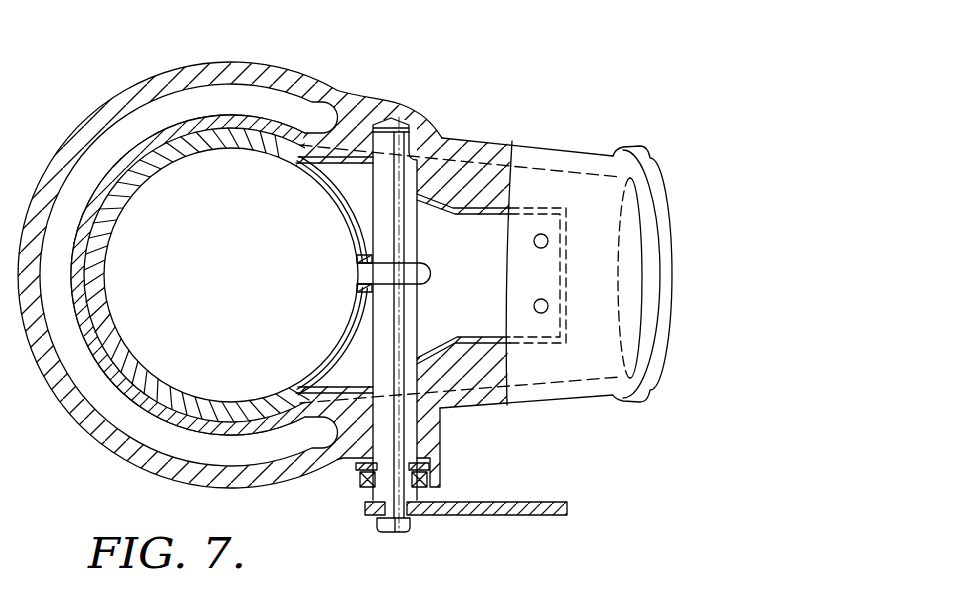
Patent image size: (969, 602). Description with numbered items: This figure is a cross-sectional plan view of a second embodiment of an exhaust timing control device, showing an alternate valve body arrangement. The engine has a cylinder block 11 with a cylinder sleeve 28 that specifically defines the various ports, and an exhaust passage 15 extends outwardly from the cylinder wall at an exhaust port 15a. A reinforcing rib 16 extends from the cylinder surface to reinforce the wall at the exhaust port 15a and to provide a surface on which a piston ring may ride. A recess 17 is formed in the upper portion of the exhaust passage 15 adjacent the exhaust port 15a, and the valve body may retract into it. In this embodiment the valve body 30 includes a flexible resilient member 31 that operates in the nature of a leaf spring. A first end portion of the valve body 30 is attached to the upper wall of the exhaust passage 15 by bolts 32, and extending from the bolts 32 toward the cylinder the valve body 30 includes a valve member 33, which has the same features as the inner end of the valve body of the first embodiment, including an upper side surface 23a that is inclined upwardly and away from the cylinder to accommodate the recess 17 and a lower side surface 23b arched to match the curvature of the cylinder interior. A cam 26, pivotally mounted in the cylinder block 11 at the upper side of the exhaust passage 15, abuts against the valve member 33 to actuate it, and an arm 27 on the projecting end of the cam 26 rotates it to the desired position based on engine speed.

The cylinder block 11 is at (279, 73).
The exhaust passage 15 is at (569, 172).
The exhaust port 15a is at (344, 240).
The reinforcing rib 16 is at (352, 278).
The recess 17 is at (480, 188).
The upper side surface 23a is at (335, 199).
The lower side surface 23b is at (335, 355).
The cam 26 is at (404, 323).
The arm 27 is at (465, 517).
The cylinder sleeve 28 is at (103, 322).
The valve body 30 is at (422, 198).
The flexible resilient member 31 is at (487, 262).
The bolts 32 is at (548, 245).
The valve member 33 is at (351, 178).